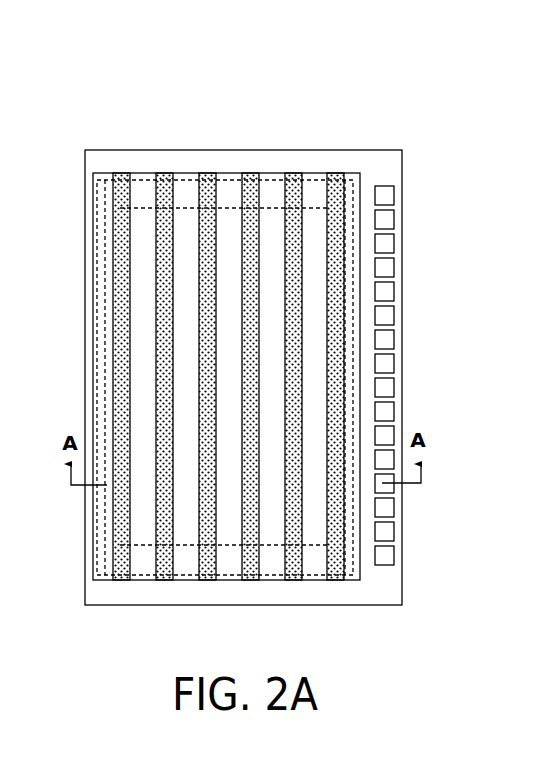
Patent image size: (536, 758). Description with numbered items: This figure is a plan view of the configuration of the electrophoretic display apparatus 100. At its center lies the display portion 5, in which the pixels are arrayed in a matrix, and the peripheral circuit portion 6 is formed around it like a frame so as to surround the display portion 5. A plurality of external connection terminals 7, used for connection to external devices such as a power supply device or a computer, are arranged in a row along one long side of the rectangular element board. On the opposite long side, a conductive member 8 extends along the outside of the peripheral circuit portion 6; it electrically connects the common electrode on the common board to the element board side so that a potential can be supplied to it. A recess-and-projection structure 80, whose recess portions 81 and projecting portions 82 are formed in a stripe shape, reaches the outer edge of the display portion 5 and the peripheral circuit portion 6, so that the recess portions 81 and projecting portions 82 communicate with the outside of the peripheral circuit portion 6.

The electrophoretic display apparatus 100 is at (366, 94).
The recess-and-projection structure 80 is at (228, 315).
The recess portion 81 is at (206, 180).
The projecting portion 82 is at (142, 338).
The peripheral circuit portion 6 is at (270, 180).
The display portion 5 is at (315, 208).
The conductive member 8 is at (95, 223).
The external connection terminal 7 is at (382, 555).